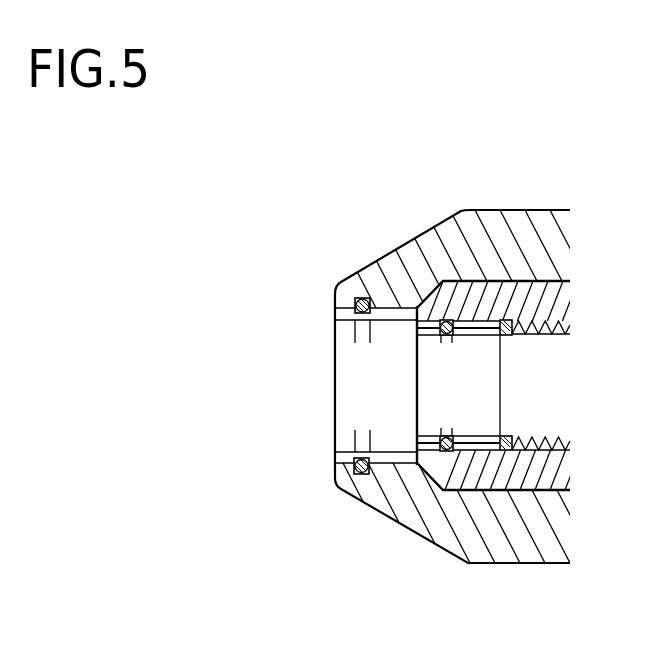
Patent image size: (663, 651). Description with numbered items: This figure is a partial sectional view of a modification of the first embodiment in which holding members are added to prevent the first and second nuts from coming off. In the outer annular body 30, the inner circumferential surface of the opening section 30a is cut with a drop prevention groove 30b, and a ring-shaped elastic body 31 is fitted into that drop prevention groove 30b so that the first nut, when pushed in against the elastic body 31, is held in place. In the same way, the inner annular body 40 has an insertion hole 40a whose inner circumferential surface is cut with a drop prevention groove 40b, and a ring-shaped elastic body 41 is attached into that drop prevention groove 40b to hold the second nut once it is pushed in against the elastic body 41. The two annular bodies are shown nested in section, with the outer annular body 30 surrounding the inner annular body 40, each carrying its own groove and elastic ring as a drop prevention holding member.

The outer annular body 30 is at (397, 244).
The opening section 30a is at (393, 312).
The drop prevention groove 30b is at (364, 318).
The ring-shaped elastic body 31 is at (356, 456).
The inner annular body 40 is at (502, 225).
The insertion hole 40a is at (478, 335).
The drop prevention groove 40b is at (449, 340).
The ring-shaped elastic body 41 is at (447, 338).